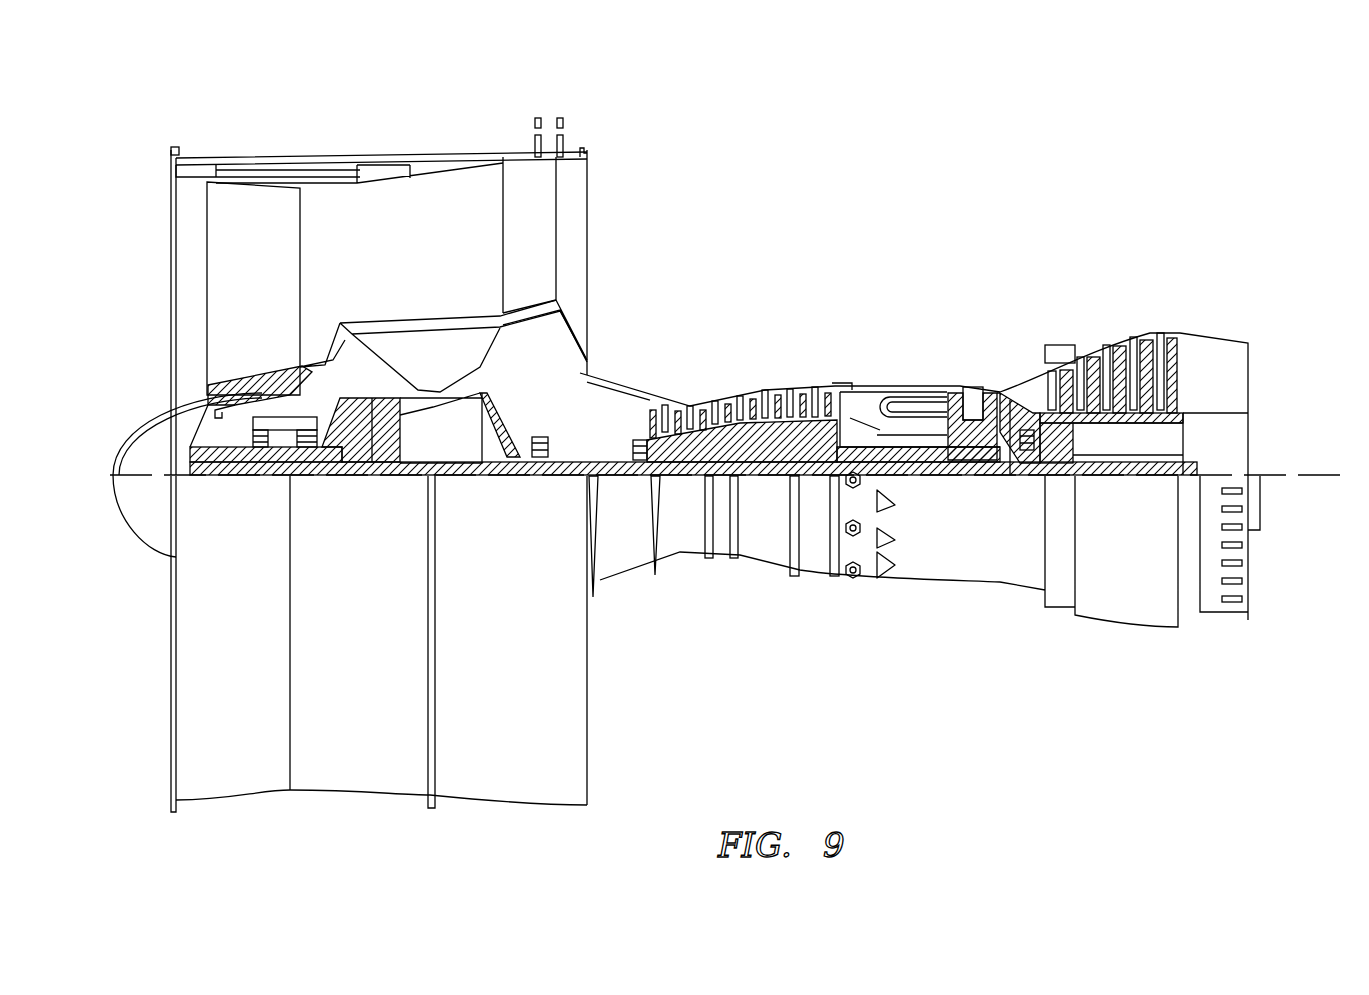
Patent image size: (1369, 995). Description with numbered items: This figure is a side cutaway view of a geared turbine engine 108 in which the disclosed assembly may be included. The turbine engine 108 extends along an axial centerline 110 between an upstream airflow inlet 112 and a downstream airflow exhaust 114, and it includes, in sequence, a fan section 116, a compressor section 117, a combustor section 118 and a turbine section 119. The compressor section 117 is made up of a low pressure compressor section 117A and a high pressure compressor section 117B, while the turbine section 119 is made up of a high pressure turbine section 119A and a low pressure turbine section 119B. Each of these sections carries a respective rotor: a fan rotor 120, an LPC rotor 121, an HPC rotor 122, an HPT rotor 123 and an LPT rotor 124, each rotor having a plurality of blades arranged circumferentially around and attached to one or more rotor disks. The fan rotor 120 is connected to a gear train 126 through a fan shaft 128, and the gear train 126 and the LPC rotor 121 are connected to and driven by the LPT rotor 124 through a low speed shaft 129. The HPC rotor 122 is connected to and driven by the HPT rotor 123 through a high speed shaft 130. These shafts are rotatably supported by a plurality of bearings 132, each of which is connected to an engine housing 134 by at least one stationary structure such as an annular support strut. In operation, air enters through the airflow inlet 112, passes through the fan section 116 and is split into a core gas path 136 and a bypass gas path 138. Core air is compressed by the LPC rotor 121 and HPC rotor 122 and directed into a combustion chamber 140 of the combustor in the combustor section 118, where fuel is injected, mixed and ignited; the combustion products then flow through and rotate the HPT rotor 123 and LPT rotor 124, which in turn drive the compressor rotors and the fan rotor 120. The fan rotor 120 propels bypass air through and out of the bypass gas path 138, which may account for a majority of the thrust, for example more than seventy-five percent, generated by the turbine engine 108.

The geared turbine engine 108 is at (133, 127).
The axial centerline 110 is at (1307, 490).
The airflow inlet 112 is at (171, 232).
The airflow exhaust 114 is at (1250, 377).
The fan section 116 is at (347, 135).
The compressor section 117 is at (815, 69).
The low pressure compressor section 117A is at (590, 117).
The high pressure compressor section 117B is at (815, 312).
The combustor section 118 is at (940, 312).
The turbine section 119 is at (1208, 244).
The high pressure turbine section 119A is at (1025, 312).
The low pressure turbine section 119B is at (1208, 312).
The fan rotor 120 is at (192, 397).
The LPC rotor 121 is at (487, 427).
The HPC rotor 122 is at (760, 432).
The HPT rotor 123 is at (977, 480).
The LPT rotor 124 is at (1120, 422).
The gear train 126 is at (385, 478).
The fan shaft 128 is at (243, 478).
The low speed shaft 129 is at (1125, 478).
The high speed shaft 130 is at (908, 478).
The bearings 132 is at (302, 448).
The engine housing 134 is at (614, 592).
The core gas path 136 is at (610, 402).
The bypass gas path 138 is at (440, 251).
The combustion chamber 140 is at (897, 410).